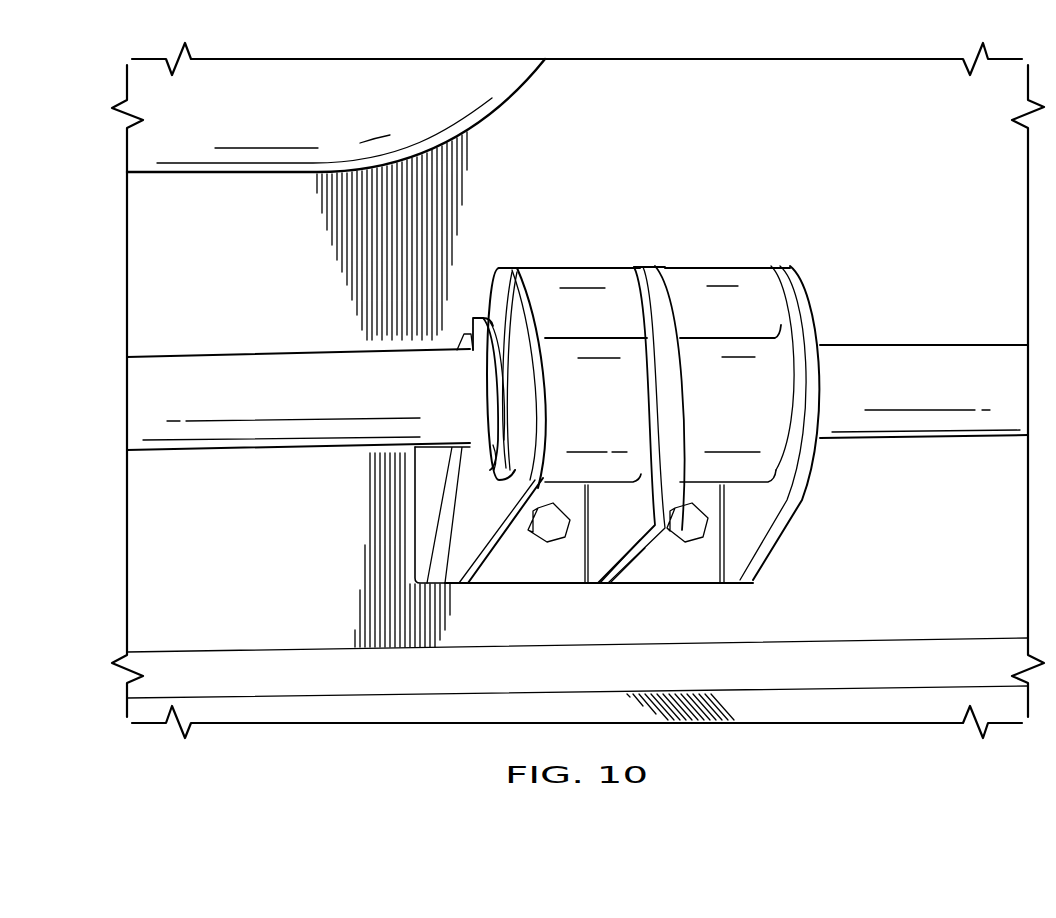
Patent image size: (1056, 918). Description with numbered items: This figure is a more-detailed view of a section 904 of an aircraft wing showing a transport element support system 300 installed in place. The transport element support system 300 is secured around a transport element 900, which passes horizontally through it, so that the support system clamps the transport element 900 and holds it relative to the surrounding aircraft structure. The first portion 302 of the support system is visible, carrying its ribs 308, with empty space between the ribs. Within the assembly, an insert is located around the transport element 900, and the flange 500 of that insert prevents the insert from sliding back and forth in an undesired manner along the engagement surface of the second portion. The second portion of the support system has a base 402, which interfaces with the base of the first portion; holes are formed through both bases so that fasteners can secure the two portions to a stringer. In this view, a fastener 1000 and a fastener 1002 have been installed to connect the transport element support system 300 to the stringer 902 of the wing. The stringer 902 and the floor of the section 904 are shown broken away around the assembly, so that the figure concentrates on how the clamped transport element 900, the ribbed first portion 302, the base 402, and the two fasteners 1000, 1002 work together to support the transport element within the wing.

The transport element support system 300 is at (592, 423).
The first portion 302 is at (812, 490).
The ribs 308 is at (672, 297).
The base 402 is at (420, 478).
The flange 500 is at (470, 333).
The transport element 900 is at (913, 357).
The stringer 902 is at (668, 180).
The section 904 is at (800, 745).
The fastener 1000 is at (689, 530).
The fastener 1002 is at (552, 532).